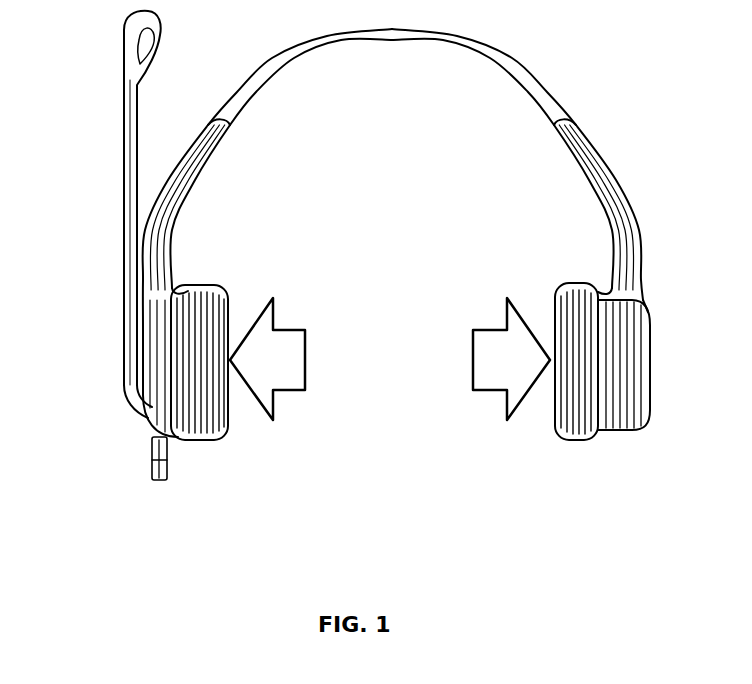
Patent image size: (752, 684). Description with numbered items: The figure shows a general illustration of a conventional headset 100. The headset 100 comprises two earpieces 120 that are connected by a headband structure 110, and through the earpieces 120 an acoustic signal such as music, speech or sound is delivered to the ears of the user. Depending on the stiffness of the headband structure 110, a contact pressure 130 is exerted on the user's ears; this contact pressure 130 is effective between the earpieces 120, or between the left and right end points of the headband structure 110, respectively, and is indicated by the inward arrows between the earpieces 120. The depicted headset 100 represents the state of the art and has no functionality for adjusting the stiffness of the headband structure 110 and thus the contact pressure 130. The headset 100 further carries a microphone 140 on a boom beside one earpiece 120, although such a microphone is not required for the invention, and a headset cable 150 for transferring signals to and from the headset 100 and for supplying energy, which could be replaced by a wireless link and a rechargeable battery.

The headset 100 is at (554, 60).
The headband structure 110 is at (417, 32).
The earpieces 120 is at (207, 395).
The contact pressure 130 is at (275, 375).
The microphone 140 is at (145, 50).
The headset cable 150 is at (160, 478).